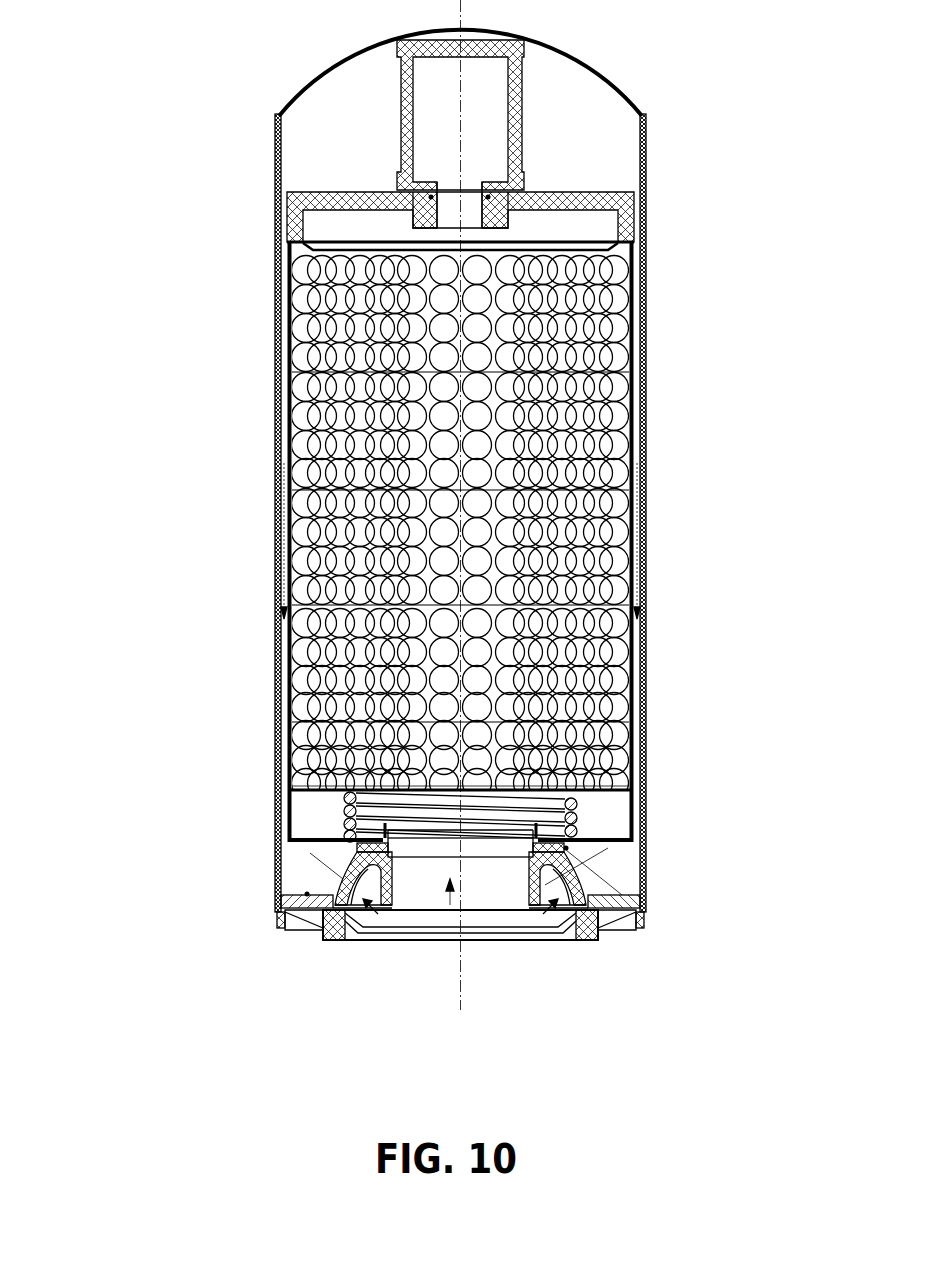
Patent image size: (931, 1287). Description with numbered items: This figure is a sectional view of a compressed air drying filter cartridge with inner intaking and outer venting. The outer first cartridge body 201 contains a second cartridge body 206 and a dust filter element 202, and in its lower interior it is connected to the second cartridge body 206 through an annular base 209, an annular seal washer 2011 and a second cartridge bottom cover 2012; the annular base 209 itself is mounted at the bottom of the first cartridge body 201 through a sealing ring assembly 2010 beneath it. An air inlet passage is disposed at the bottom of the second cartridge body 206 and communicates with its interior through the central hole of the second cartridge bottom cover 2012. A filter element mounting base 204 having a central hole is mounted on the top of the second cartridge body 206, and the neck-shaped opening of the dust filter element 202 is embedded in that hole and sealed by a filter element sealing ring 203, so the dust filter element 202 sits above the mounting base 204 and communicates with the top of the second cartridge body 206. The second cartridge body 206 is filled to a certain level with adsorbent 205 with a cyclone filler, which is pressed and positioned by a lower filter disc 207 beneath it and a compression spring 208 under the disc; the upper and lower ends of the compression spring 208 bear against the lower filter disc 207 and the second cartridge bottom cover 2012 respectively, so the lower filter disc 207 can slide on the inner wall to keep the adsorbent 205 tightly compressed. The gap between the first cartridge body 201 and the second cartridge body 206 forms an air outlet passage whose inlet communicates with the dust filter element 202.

The first cartridge body 201 is at (297, 97).
The dust filter element 202 is at (407, 181).
The filter element sealing ring 203 is at (431, 197).
The filter element mounting base 204 is at (303, 210).
The adsorbent 205 is at (370, 433).
The second cartridge body 206 is at (288, 728).
The lower filter disc 207 is at (342, 803).
The compression spring 208 is at (352, 822).
The annular base 209 is at (276, 930).
The sealing ring assembly 2010 is at (334, 940).
The annular seal washer 2011 is at (647, 921).
The second cartridge bottom cover 2012 is at (566, 848).